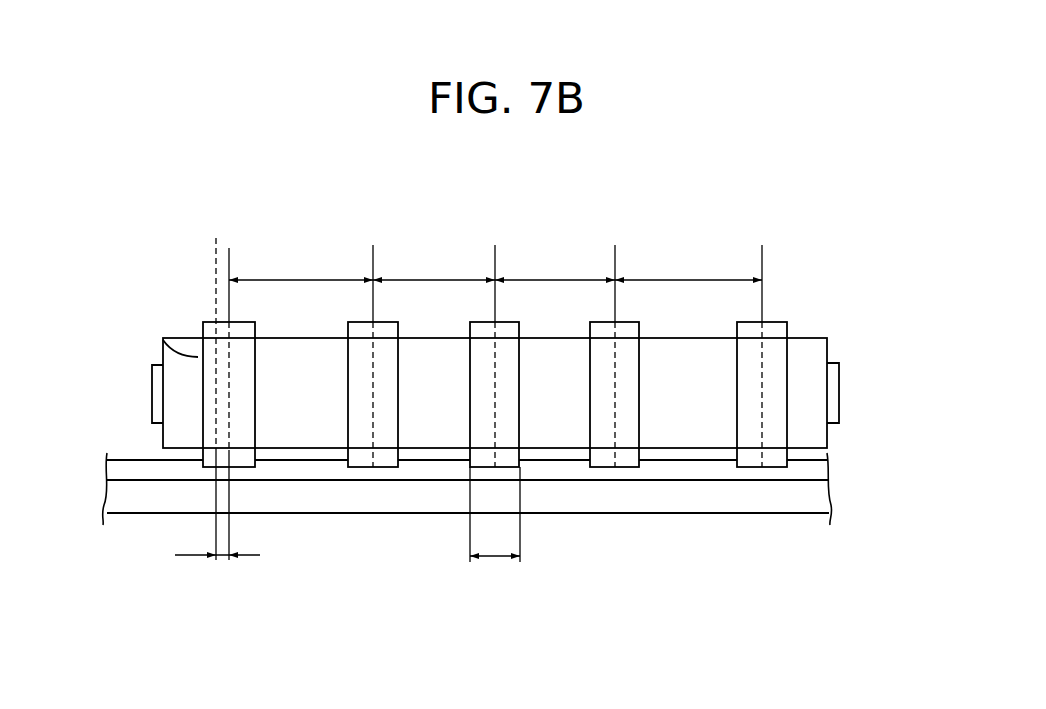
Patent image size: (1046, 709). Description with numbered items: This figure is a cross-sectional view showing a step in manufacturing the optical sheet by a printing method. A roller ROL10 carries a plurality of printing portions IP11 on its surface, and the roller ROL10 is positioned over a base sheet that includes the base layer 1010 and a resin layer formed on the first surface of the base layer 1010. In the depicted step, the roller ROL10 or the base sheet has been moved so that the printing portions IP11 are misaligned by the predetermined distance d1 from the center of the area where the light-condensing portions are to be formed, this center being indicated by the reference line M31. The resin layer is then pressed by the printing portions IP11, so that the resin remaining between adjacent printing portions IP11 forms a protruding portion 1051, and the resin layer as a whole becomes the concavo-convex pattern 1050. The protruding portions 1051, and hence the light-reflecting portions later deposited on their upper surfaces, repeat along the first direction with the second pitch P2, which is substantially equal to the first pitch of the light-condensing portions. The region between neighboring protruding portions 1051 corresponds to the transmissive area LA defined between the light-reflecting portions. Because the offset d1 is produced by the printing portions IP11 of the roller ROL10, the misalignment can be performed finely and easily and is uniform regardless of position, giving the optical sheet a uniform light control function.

The base layer 1010 is at (820, 498).
The concavo-convex pattern 1050 is at (827, 480).
The protruding portion 1051 is at (690, 462).
The roller ROL10 is at (192, 340).
The printing portion IP11 is at (163, 340).
The center/reference line M31 is at (213, 385).
The second pitch P2 is at (495, 267).
The misalignment d1 is at (217, 569).
The transmissive area LA is at (495, 527).